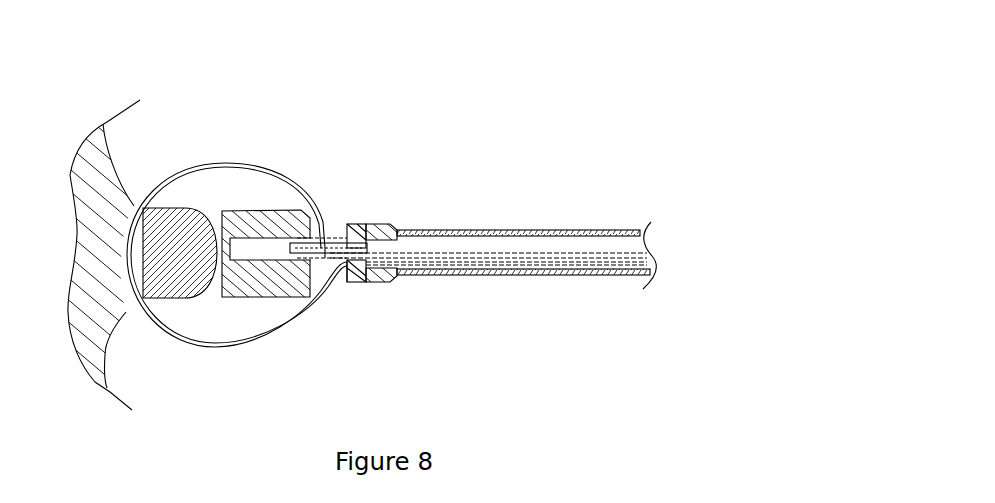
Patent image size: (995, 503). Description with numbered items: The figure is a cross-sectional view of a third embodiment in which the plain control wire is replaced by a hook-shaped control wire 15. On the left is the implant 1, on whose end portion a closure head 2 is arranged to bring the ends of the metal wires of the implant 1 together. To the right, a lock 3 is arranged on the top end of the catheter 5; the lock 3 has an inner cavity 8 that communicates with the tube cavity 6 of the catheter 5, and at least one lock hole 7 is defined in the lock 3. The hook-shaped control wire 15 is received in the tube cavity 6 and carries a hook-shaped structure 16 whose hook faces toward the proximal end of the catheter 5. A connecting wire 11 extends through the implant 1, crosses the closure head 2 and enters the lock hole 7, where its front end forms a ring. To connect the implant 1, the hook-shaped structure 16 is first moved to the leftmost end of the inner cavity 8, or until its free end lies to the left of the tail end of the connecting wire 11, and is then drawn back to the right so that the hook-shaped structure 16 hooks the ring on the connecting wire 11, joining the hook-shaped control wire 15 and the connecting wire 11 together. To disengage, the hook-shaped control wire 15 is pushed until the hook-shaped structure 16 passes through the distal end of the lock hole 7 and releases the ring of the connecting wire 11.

The implant 1 is at (110, 207).
The closure head 2 is at (147, 205).
The lock 3 is at (233, 211).
The inner cavity 8 is at (243, 238).
The hook-shaped control wire 15 is at (335, 240).
The hook-shaped structure 16 is at (380, 230).
The catheter 5 is at (410, 231).
The tube cavity 6 is at (452, 233).
The lock hole 7 is at (333, 268).
The connecting wire 11 is at (257, 340).